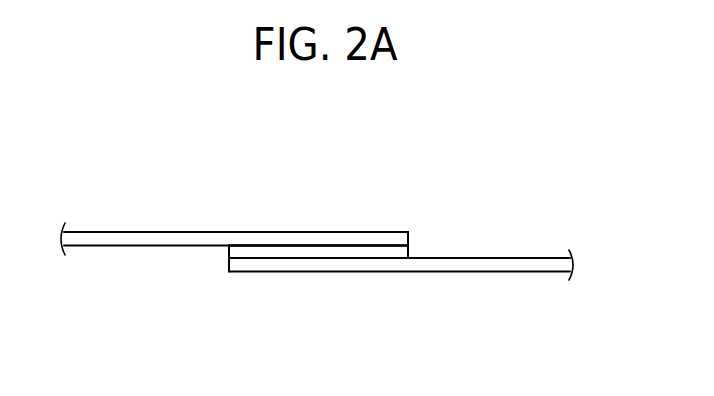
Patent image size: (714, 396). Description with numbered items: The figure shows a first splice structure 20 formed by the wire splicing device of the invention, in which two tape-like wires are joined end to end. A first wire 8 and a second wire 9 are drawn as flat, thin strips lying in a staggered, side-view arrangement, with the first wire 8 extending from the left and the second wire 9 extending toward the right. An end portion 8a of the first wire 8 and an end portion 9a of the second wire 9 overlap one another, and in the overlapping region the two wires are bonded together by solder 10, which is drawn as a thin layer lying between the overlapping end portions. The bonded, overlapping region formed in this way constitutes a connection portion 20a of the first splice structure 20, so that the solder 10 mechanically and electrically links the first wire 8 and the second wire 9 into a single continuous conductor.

The first splice structure 20 is at (324, 220).
The connection portion 20a is at (328, 208).
The first wire 8 is at (158, 238).
The end portion of the first wire 8a is at (411, 243).
The second wire 9 is at (483, 265).
The end portion of the second wire 9a is at (229, 264).
The solder 10 is at (402, 252).